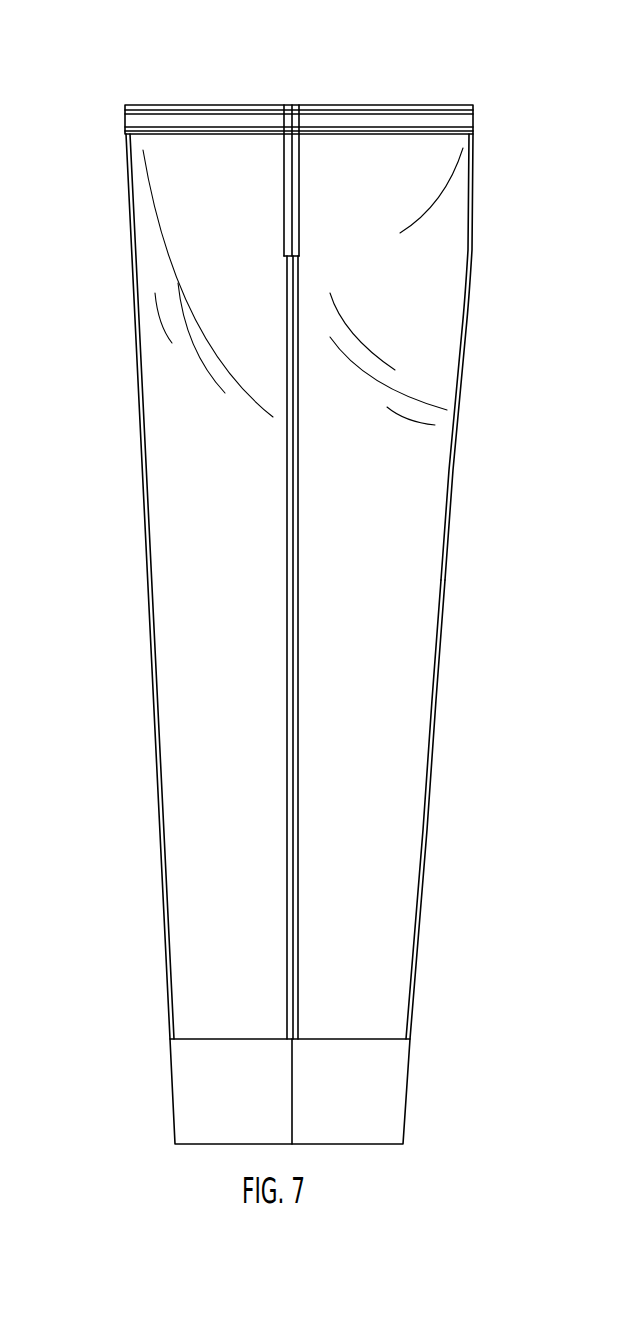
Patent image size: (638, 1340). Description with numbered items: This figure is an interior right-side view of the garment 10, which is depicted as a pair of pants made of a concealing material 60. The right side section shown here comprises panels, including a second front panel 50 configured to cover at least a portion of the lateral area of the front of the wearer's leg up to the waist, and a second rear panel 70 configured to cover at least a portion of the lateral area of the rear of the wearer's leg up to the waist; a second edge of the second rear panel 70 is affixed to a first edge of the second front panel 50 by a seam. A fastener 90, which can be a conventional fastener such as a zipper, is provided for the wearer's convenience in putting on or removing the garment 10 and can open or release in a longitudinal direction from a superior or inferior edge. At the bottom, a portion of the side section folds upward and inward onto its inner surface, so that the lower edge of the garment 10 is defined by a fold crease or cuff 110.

The garment 10 is at (104, 99).
The second front panel 50 is at (185, 677).
The concealing material 60 is at (428, 328).
The second rear panel 70 is at (397, 810).
The fastener 90 is at (285, 126).
The cuff 110 is at (197, 1098).